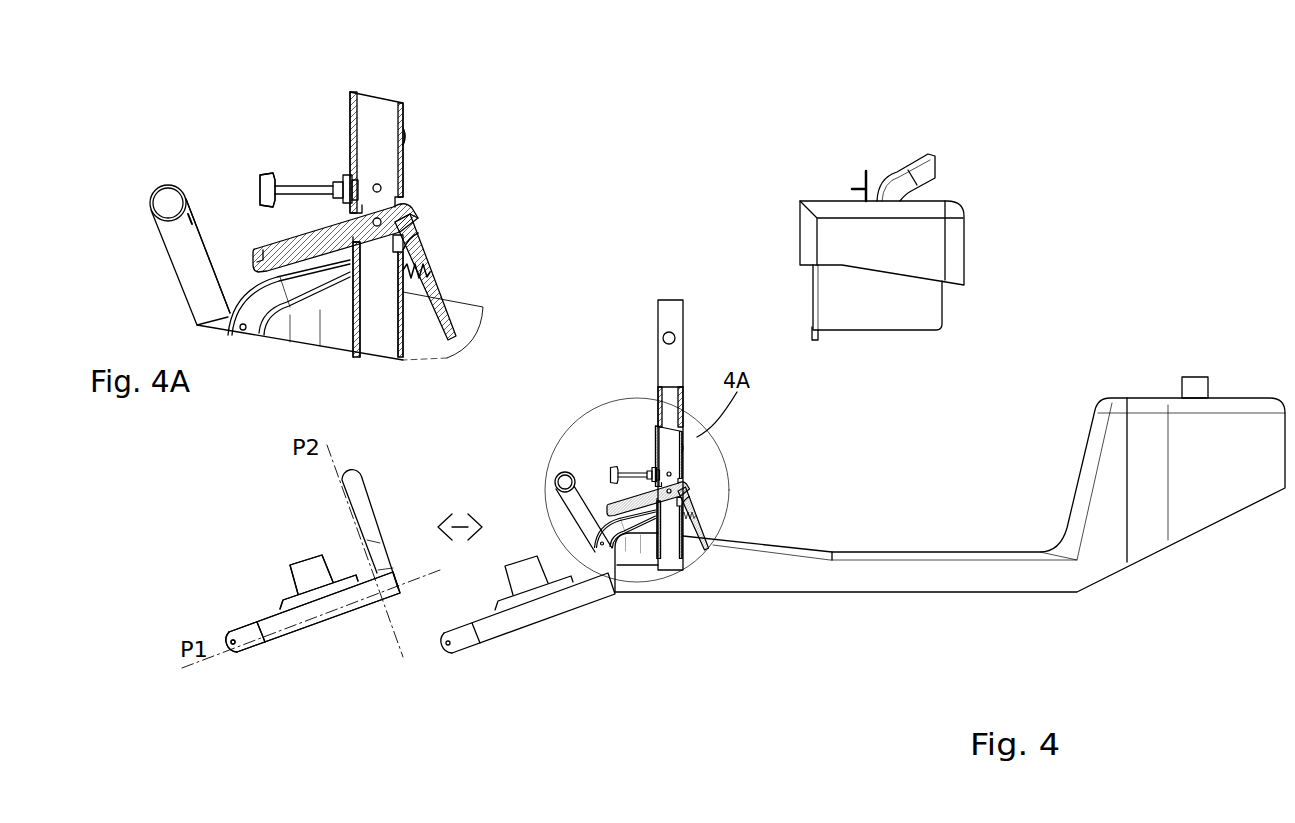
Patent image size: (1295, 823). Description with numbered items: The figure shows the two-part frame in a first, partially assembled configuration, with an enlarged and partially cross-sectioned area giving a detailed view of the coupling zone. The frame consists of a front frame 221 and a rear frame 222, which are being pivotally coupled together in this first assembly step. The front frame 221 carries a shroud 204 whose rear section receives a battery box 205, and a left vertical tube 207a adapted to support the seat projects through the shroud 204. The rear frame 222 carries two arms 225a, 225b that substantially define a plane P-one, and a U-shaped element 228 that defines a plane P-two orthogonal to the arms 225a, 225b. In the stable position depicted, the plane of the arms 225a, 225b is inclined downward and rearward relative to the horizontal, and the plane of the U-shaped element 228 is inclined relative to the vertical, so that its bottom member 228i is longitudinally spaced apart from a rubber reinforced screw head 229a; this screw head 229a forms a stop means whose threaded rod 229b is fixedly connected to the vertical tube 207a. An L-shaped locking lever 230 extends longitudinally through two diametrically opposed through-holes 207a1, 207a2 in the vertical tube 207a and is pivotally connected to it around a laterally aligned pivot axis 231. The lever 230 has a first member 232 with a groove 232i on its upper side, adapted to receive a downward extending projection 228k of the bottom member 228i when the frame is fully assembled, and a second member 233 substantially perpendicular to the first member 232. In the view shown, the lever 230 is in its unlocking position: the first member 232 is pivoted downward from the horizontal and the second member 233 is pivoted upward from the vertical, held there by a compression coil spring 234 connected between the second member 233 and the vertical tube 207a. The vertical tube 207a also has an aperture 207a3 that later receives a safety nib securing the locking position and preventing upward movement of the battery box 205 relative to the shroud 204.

In FIG. 4, the shroud 204 is at (1132, 398).
In FIG. 4, the battery box 205 is at (964, 201).
In FIG. 4, the front frame 221 is at (821, 622).
In FIG. 4, the rear frame 222 is at (555, 615).
In FIG. 4, the arm 225a is at (287, 623).
In FIG. 4, the arm 225b is at (313, 603).
In FIG. 4, the U-shaped element 228 is at (367, 490).
In FIG. 4A, the bottom member 228i is at (152, 203).
In FIG. 4A, the projection 228k is at (188, 225).
In FIG. 4A, the rubber reinforced screw head 229a is at (262, 172).
In FIG. 4A, the threaded rod 229b is at (312, 187).
In FIG. 4, the locking lever 230 is at (703, 527).
In FIG. 4A, the pivot axis 231 is at (393, 207).
In FIG. 4A, the first member 232 is at (283, 252).
In FIG. 4A, the groove 232i is at (262, 250).
In FIG. 4A, the second member 233 is at (448, 302).
In FIG. 4A, the coil spring 234 is at (420, 262).
In FIG. 4A, the left vertical tube 207a is at (405, 343).
In FIG. 4A, the through-hole 207a1 is at (397, 250).
In FIG. 4A, the through-hole 207a2 is at (393, 237).
In FIG. 4A, the aperture 207a3 is at (405, 133).